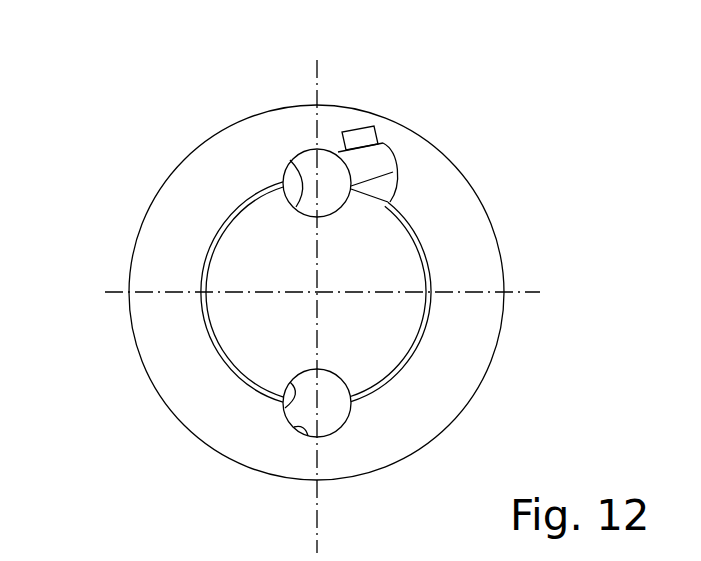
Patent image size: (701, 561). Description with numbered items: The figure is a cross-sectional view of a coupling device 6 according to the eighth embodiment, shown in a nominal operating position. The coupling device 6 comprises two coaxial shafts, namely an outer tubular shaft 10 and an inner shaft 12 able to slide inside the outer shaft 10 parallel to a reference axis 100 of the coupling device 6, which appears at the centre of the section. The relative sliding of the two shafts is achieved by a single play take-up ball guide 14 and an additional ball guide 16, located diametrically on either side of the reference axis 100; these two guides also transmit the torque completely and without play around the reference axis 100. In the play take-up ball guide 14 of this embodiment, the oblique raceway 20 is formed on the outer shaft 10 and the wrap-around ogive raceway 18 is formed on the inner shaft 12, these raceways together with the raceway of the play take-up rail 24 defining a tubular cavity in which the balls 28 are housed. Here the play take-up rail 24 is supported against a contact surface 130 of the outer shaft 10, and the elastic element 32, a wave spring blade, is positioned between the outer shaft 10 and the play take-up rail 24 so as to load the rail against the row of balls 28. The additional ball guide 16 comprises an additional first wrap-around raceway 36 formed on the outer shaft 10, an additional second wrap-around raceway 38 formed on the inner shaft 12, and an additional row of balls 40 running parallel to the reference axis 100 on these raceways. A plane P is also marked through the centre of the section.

The coupling device 6 is at (105, 200).
The outer tubular shaft 10 is at (480, 325).
The inner shaft 12 is at (417, 246).
The play take-up ball guide 14 is at (200, 125).
The additional ball guide 16 is at (75, 423).
The wrap-around raceway 18 is at (301, 160).
The oblique raceway 20 is at (306, 166).
The play take-up rail 24 is at (369, 164).
The balls 28 is at (330, 167).
The elastic element 32 is at (362, 128).
The additional first wrap-around raceway 36 is at (298, 430).
The additional second wrap-around raceway 38 is at (302, 411).
The additional row of balls 40 is at (285, 418).
The reference axis 100 is at (318, 294).
The contact surface 130 is at (383, 145).
The plane P is at (320, 544).